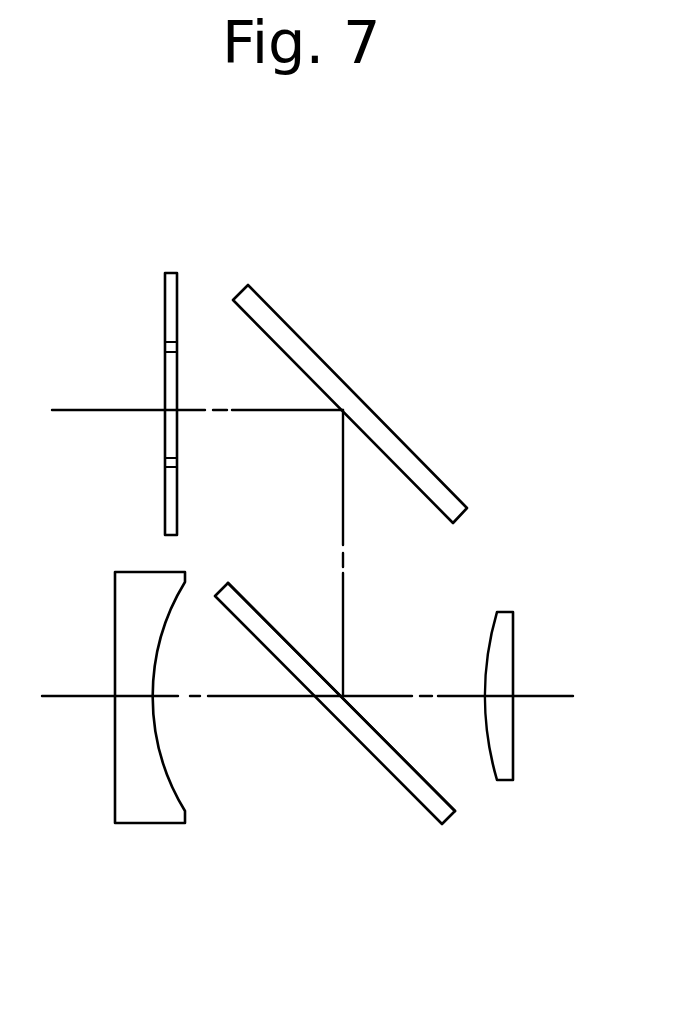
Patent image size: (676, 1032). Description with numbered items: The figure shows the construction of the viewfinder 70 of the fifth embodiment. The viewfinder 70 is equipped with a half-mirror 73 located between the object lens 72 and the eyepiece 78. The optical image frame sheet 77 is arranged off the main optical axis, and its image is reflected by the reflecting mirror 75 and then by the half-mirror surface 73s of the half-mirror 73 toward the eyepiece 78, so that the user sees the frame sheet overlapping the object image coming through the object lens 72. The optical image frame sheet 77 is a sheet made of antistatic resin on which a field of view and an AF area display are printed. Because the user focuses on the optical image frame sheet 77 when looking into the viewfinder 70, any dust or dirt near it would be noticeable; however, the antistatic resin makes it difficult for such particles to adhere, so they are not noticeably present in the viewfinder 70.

The viewfinder 70 is at (363, 293).
The object lens 72 is at (148, 823).
The half-mirror 73 is at (403, 787).
The half-mirror surface 73s is at (257, 606).
The reflecting mirror 75 is at (415, 453).
The optical image frame sheet 77 is at (178, 305).
The eyepiece 78 is at (505, 780).